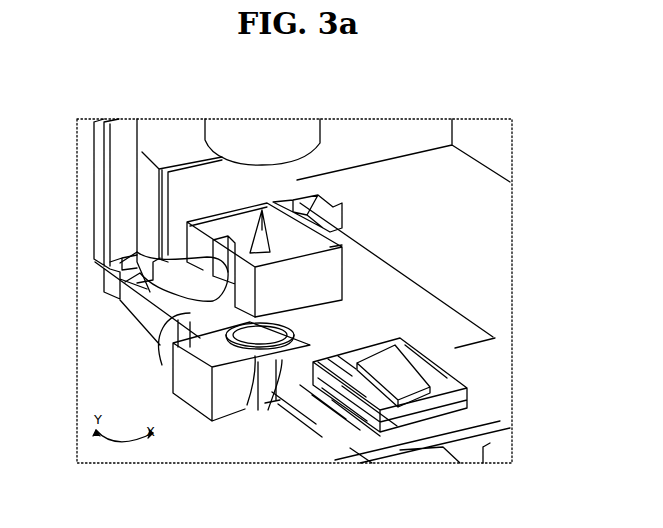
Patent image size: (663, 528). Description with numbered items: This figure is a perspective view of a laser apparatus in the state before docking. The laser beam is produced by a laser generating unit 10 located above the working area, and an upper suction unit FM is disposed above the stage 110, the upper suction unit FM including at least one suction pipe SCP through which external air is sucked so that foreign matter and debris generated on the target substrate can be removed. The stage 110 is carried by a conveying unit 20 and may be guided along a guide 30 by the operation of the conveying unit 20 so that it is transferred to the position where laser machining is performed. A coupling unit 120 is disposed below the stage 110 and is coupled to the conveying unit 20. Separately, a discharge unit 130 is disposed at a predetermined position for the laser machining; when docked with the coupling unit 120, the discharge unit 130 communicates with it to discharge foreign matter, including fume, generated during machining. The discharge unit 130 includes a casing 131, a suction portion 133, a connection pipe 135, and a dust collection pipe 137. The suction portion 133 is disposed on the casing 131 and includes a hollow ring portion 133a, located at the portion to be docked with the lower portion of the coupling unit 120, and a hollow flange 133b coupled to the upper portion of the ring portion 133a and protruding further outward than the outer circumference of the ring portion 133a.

The laser generating unit 10 is at (258, 125).
The suction pipe SCP is at (120, 260).
The upper suction unit FM is at (343, 270).
The guide 30 is at (430, 298).
The conveying unit 20 is at (497, 339).
The stage 110 is at (430, 378).
The coupling unit 120 is at (350, 458).
The discharge unit 130 is at (150, 377).
The casing 131 is at (213, 422).
The suction portion 133 is at (253, 440).
The ring portion 133a is at (247, 405).
The flange 133b is at (268, 410).
The connection pipe 135 is at (158, 352).
The dust collection pipe 137 is at (135, 321).